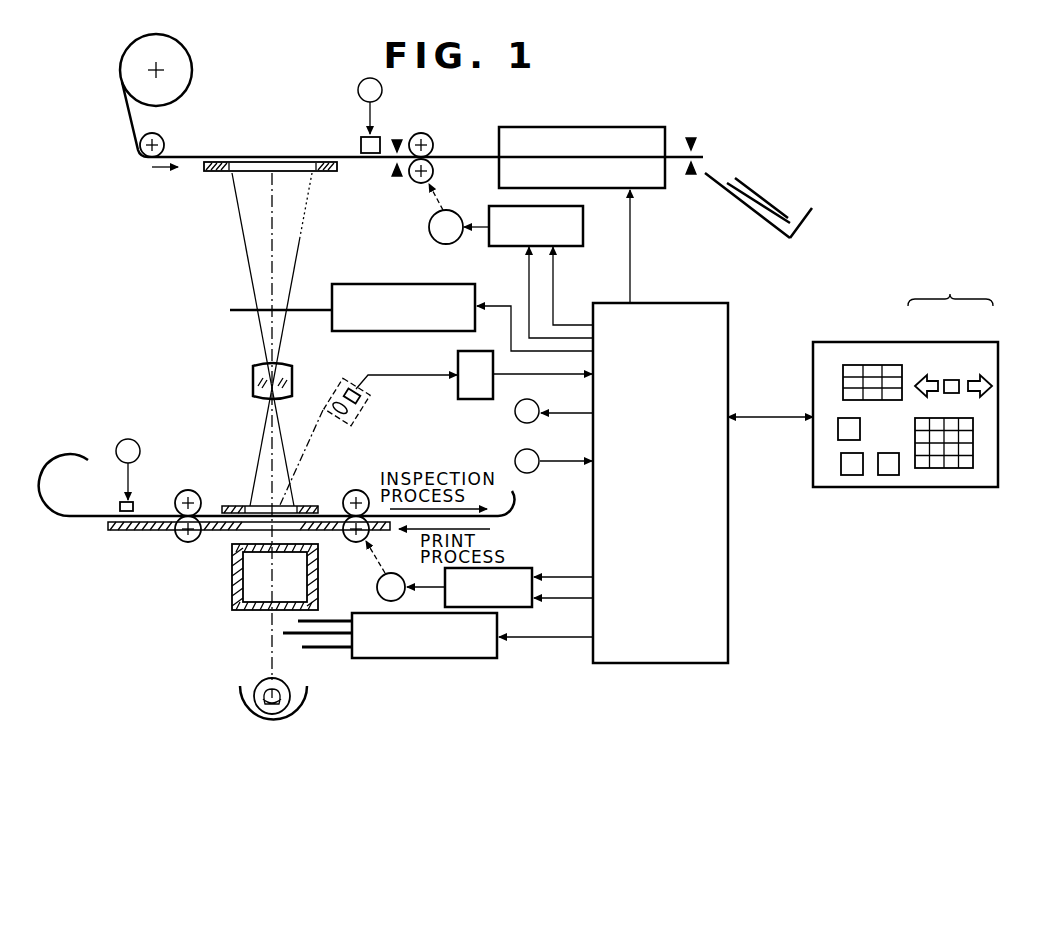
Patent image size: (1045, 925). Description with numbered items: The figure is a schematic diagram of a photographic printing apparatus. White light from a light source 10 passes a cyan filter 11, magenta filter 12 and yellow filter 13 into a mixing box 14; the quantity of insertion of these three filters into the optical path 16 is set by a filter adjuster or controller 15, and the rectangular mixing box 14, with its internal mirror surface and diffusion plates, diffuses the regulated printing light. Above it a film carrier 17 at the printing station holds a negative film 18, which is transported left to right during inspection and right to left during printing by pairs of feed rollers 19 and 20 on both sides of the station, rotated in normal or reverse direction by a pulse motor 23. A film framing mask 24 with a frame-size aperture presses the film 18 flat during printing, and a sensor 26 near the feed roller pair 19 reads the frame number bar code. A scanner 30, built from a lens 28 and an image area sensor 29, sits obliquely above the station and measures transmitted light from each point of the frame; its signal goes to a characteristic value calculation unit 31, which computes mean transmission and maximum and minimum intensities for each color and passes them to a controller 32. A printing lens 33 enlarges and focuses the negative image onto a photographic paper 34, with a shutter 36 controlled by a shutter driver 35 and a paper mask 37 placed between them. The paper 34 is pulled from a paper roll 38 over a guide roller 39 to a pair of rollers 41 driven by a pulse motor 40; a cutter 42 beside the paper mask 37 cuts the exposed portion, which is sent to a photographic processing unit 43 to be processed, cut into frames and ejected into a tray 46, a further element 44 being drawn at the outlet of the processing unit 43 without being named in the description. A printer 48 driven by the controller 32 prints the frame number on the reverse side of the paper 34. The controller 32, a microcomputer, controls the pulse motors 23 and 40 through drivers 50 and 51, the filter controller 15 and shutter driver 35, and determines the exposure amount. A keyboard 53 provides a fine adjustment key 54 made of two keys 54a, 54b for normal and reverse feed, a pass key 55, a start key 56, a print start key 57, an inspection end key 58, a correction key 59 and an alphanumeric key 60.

The light source 10 is at (297, 703).
The cyan filter 11 is at (330, 650).
The magenta filter 12 is at (282, 634).
The yellow filter 13 is at (296, 621).
The mixing box 14 is at (232, 576).
The filter adjuster or controller 15 is at (497, 656).
The optical path 16 is at (270, 430).
The film carrier 17 is at (212, 531).
The negative film 18 is at (88, 522).
The feed rollers 19 is at (186, 490).
The feed rollers 20 is at (362, 490).
The pulse motor 23 is at (377, 585).
The film framing mask 24 is at (318, 503).
The sensor 26 is at (118, 500).
The lens 28 is at (360, 411).
The image area sensor 29 is at (350, 378).
The scanner 30 is at (372, 397).
The characteristic value calculation unit 31 is at (476, 400).
The controller 32 is at (688, 302).
The printing lens 33 is at (252, 380).
The photographic paper 34 is at (130, 120).
The shutter driver 35 is at (390, 283).
The shutter 36 is at (316, 308).
The paper mask 37 is at (218, 175).
The paper roll 38 is at (193, 76).
The guide roller 39 is at (163, 138).
The pulse motor 40 is at (456, 240).
The pair of rollers 41 is at (411, 183).
The cutter 42 is at (398, 138).
The photographic processing unit 43 is at (577, 126).
The print sensor 44 is at (691, 136).
The tray 46 is at (812, 214).
The printer 48 is at (360, 143).
The driver 50 is at (535, 566).
The driver 51 is at (583, 232).
The keyboard 53 is at (828, 340).
The fine adjustment key 54 is at (950, 337).
The key 54a is at (935, 376).
The key 54b is at (981, 376).
The pass key 55 is at (958, 393).
The start key 56 is at (838, 428).
The print start key 57 is at (852, 477).
The inspection end key 58 is at (890, 477).
The correction key 59 is at (871, 364).
The alphanumeric key 60 is at (960, 470).